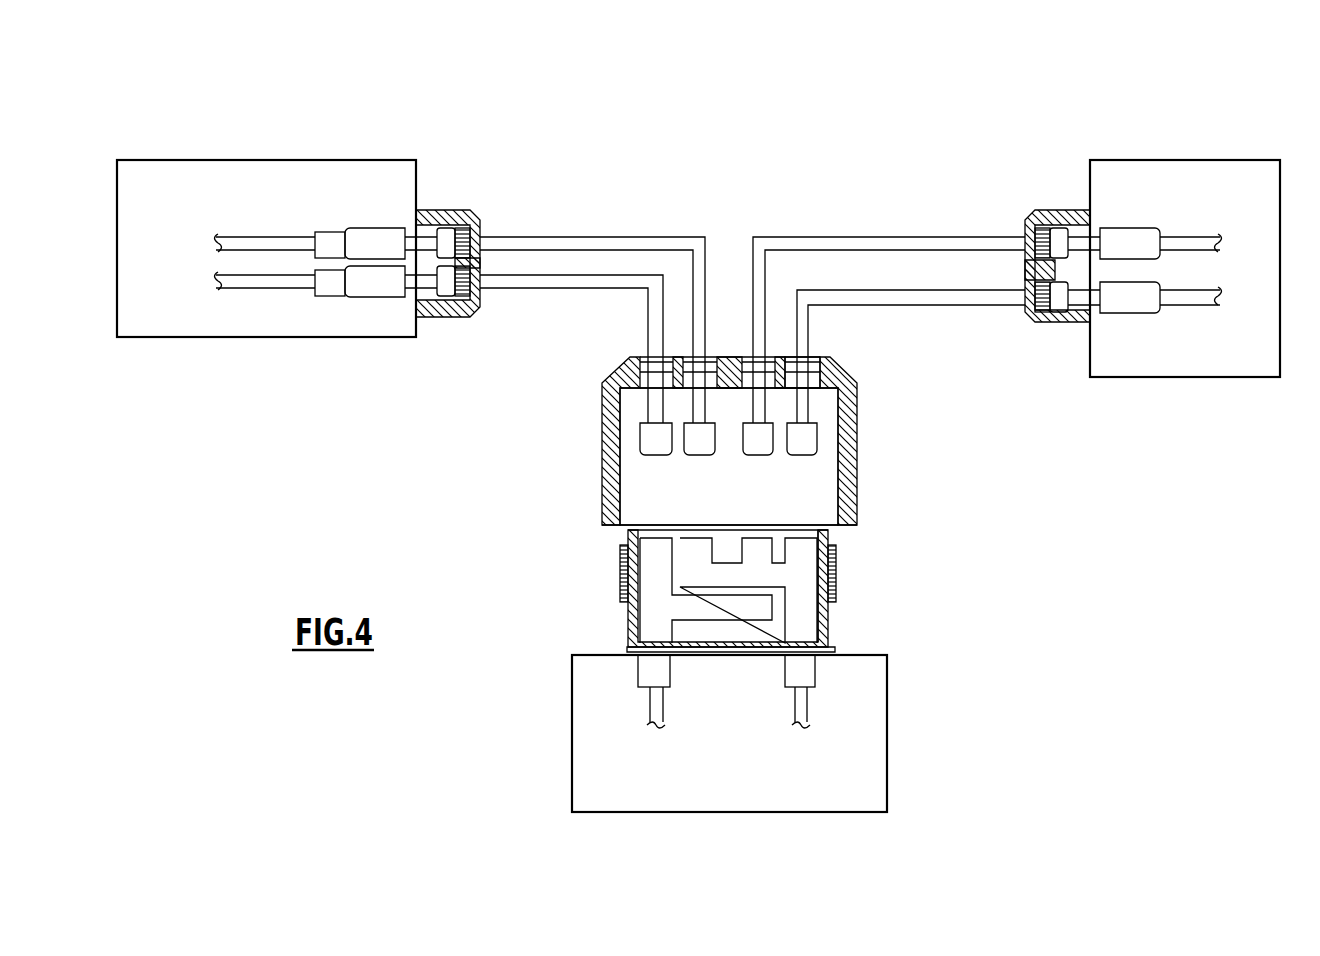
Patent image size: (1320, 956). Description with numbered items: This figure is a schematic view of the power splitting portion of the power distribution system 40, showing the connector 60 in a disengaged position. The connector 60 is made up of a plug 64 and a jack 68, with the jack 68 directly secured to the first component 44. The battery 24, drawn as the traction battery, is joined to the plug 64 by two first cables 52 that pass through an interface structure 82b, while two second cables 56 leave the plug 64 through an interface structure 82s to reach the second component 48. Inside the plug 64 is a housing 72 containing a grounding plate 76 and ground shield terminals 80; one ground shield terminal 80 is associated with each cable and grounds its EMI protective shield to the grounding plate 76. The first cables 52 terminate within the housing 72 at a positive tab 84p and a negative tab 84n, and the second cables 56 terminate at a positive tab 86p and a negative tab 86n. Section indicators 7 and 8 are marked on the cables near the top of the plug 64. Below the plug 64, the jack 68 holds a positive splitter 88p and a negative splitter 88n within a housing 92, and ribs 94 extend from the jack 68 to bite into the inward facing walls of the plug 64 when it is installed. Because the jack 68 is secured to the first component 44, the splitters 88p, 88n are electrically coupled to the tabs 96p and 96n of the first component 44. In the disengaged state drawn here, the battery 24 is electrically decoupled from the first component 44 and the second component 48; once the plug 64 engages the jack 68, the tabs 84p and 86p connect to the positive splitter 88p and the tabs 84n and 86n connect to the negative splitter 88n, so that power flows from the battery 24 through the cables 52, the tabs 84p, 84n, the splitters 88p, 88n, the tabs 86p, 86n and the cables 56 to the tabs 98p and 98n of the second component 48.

The battery 24 is at (148, 160).
The power distribution system 40 is at (1046, 80).
The first component 44 is at (620, 812).
The second component 48 is at (1130, 160).
The first cable 52 is at (588, 283).
The second cable 56 is at (888, 297).
The connector 60 is at (1017, 466).
The plug 64 is at (858, 438).
The jack 68 is at (832, 630).
The housing 72 is at (618, 373).
The grounding plate 76 is at (628, 433).
The ground shield terminal 80 is at (820, 372).
The interface structure 82b is at (472, 206).
The interface structure 82s is at (1027, 206).
The positive tab 84p is at (664, 446).
The negative tab 84n is at (700, 446).
The positive tab 86p is at (767, 446).
The negative tab 86n is at (801, 446).
The positive splitter 88p is at (652, 568).
The negative splitter 88n is at (802, 597).
The housing 92 is at (832, 618).
The ribs 94 is at (621, 556).
The positive tab 96p is at (668, 680).
The negative tab 96n is at (812, 680).
The positive tab 98p is at (1127, 237).
The negative tab 98n is at (1135, 294).
The section line for FIG. 7 is at (670, 330).
The section line for FIG. 8 is at (670, 408).